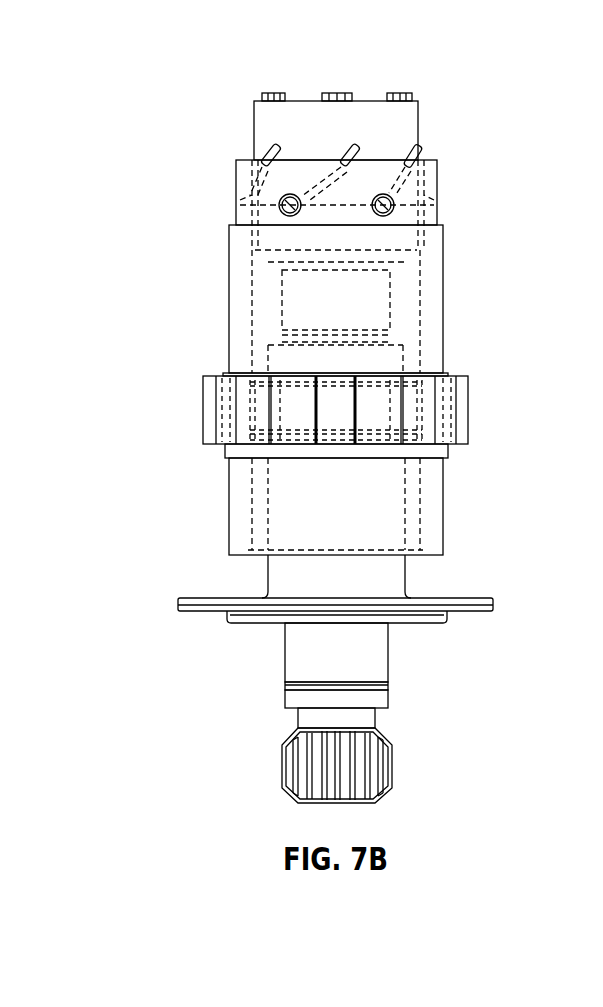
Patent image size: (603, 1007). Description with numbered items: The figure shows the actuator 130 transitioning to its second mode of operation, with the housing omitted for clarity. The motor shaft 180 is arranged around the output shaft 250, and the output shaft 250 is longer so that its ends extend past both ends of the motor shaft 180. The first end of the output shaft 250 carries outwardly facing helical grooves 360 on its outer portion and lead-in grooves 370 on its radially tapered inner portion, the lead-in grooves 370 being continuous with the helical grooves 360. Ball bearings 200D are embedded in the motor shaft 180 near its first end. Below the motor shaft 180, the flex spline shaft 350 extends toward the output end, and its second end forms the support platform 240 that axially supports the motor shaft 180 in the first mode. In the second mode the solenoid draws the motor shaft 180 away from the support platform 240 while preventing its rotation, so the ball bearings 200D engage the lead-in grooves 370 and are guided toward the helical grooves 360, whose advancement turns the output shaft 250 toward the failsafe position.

The actuator 130 is at (212, 41).
The output shaft 250 is at (395, 132).
The helical grooves 360 is at (345, 149).
The lead-in grooves 370 is at (278, 207).
The ball bearings 200D is at (428, 207).
The motor shaft 180 is at (428, 337).
The flex spline shaft 350 is at (400, 588).
The support platform 240 is at (468, 610).